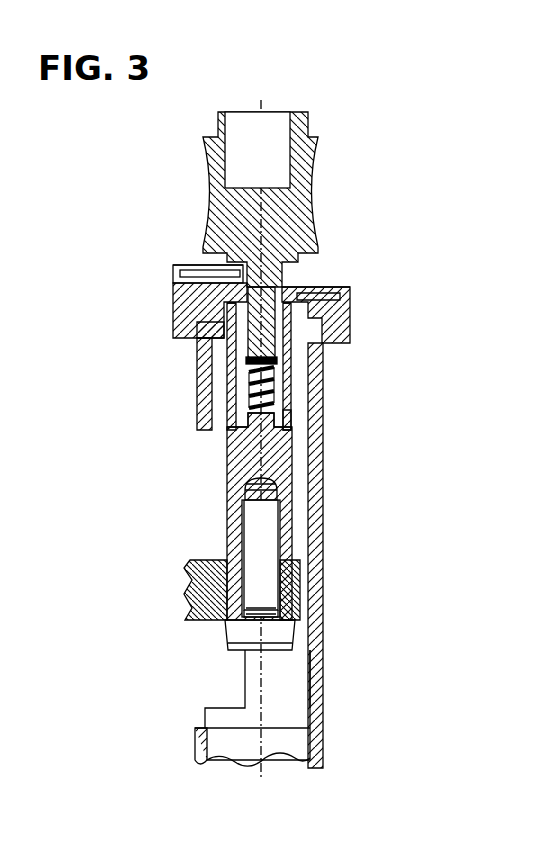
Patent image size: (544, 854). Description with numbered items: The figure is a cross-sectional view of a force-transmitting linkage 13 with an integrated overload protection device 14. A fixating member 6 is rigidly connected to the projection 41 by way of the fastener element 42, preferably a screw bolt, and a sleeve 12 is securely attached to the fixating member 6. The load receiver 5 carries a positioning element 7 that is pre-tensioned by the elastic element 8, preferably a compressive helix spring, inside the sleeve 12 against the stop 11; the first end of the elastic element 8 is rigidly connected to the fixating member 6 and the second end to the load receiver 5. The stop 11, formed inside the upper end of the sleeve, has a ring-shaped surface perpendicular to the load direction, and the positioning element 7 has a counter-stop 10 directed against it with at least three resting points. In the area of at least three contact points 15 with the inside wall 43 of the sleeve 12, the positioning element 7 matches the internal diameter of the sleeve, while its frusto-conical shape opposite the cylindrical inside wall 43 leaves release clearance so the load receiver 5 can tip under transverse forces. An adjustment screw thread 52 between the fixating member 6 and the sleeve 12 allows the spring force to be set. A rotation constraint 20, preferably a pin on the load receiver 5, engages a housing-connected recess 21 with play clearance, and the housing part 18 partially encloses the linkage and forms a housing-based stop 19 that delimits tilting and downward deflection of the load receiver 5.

The load receiver 5 is at (312, 192).
The rotation constraint 20 is at (173, 263).
The housing-connected recess 21 is at (173, 281).
The housing part 18 is at (182, 313).
The contact points 15 is at (197, 327).
The positioning element 7 is at (228, 336).
The integrated overload protection device 14 is at (195, 405).
The adjustment screw thread 52 is at (228, 438).
The force-transmitting linkage 13 is at (208, 490).
The projection 41 is at (207, 600).
The fastener element 42 is at (230, 635).
The housing-based stop 19 is at (303, 275).
The counter-stop 10 is at (315, 285).
The stop 11 is at (323, 358).
The elastic element 8 is at (280, 380).
The sleeve 12 is at (283, 395).
The inside wall 43 is at (283, 420).
The fixating member 6 is at (280, 475).